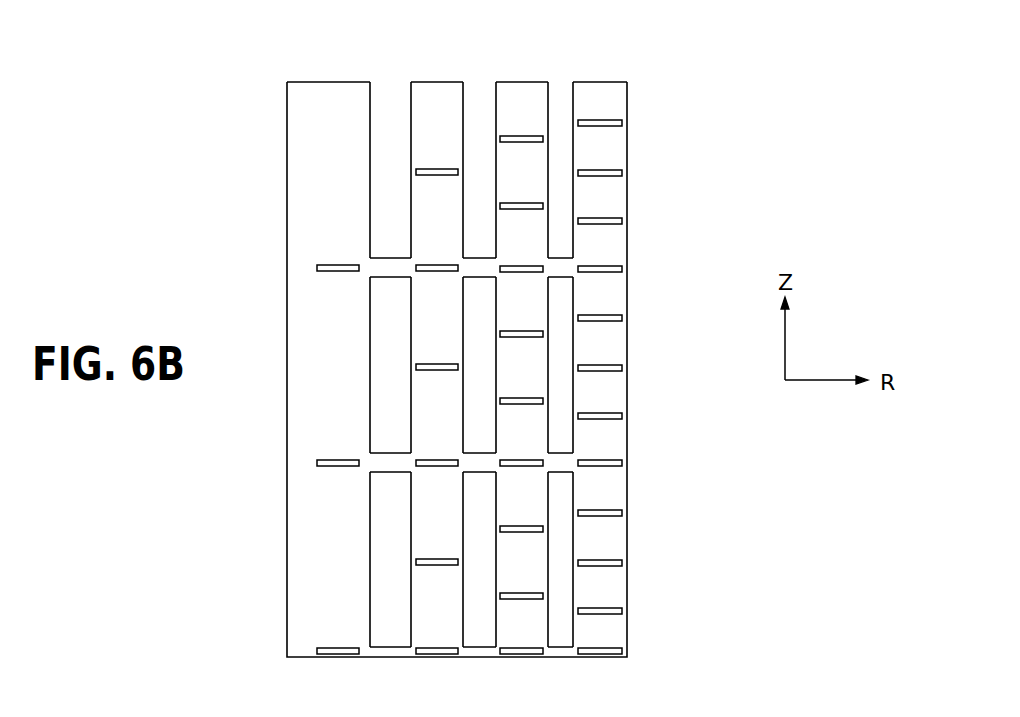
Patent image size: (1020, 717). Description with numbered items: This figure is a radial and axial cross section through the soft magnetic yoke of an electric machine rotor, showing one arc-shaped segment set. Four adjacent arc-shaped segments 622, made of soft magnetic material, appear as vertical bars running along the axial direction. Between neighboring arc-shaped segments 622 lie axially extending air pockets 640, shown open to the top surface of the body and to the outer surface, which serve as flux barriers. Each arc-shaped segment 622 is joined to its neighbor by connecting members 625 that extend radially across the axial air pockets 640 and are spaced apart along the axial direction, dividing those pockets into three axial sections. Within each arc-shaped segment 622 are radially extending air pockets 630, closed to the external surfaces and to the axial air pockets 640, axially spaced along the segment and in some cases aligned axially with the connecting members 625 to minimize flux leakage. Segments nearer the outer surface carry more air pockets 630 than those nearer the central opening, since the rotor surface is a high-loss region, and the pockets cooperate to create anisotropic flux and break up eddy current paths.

The arc-shaped segment 622 is at (335, 82).
The connecting member 625 is at (388, 265).
The radial air pocket 630 is at (622, 221).
The axial air pocket 640 is at (390, 143).